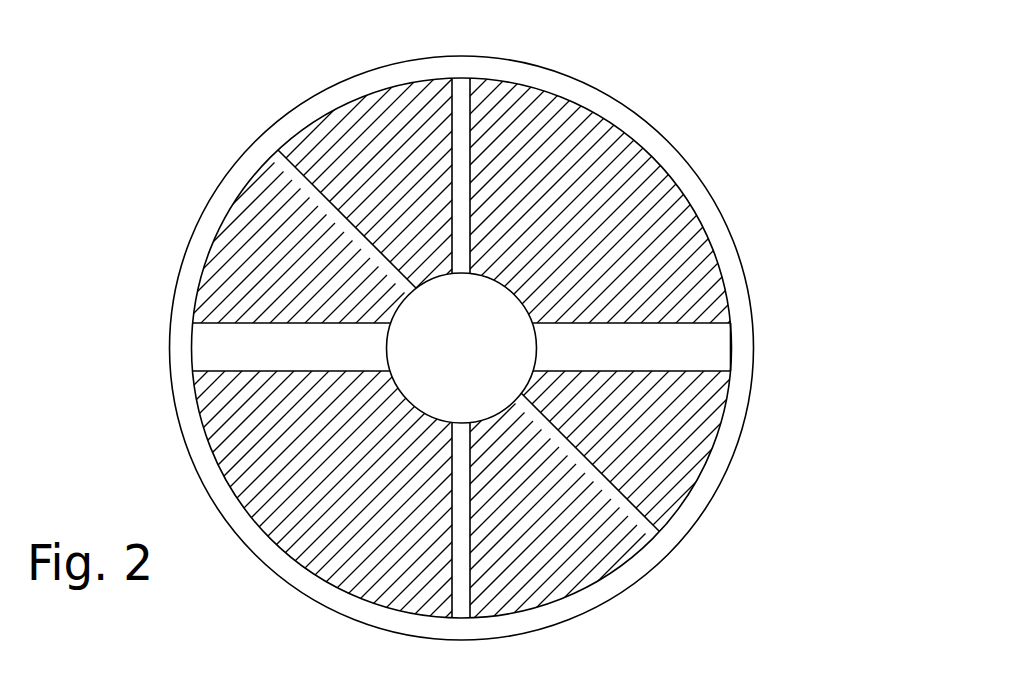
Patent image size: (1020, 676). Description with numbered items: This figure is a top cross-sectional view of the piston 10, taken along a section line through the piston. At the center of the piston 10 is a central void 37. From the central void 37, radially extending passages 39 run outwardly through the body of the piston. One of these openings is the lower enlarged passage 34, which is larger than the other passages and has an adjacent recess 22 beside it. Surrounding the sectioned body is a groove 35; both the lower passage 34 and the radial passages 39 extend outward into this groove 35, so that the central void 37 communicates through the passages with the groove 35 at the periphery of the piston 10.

The piston 10 is at (497, 320).
The recess 22 is at (740, 350).
The lower enlarged passage 34 is at (700, 350).
The groove 35 is at (735, 280).
The central void 37 is at (503, 322).
The radially extending passages 39 is at (463, 130).